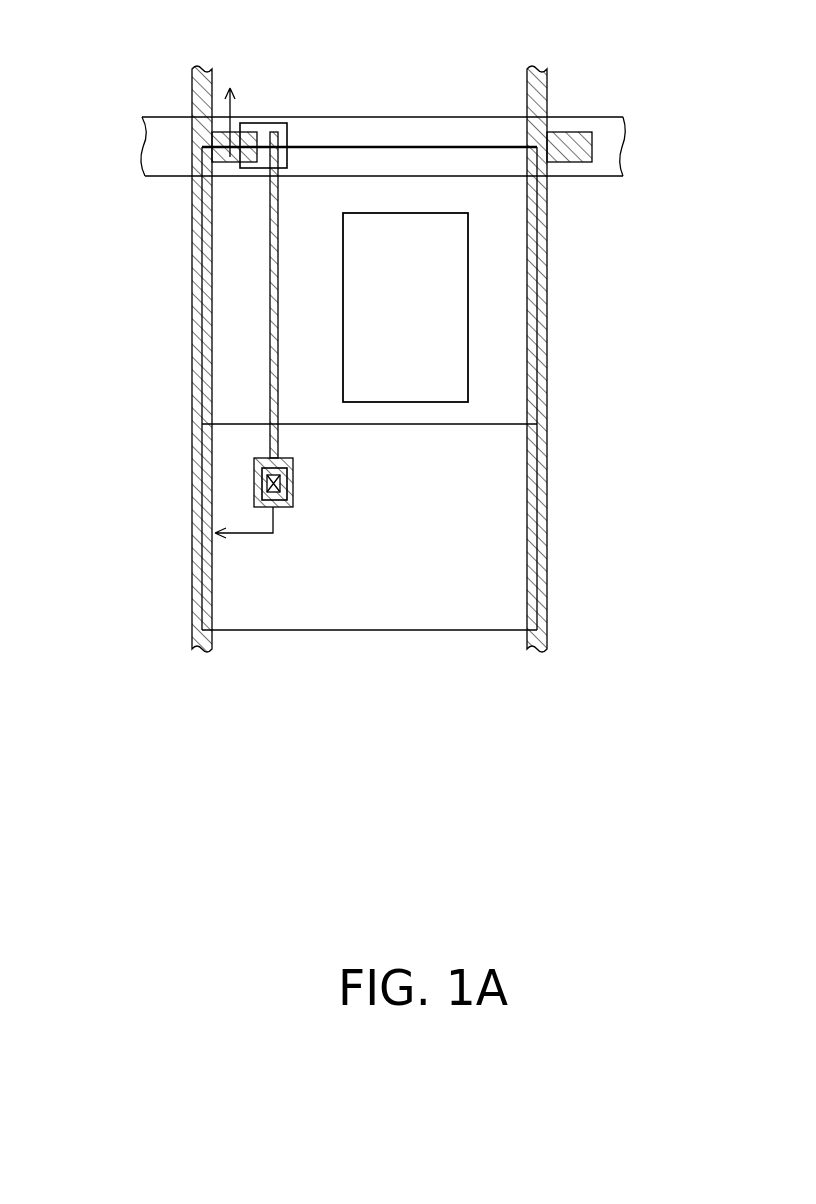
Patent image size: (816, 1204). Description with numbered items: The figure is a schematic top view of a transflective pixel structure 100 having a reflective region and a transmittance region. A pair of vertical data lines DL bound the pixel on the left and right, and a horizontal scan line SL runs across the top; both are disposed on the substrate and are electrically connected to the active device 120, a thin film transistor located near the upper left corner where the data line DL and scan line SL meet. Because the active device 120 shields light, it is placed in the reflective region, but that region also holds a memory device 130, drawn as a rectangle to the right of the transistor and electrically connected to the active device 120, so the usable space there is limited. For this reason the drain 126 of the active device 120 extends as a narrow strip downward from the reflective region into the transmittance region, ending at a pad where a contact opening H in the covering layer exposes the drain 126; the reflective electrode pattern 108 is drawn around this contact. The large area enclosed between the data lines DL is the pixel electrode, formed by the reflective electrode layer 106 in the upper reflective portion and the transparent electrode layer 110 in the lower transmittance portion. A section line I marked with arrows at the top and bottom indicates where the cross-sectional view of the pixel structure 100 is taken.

The transflective pixel structure 100 is at (714, 748).
The reflective electrode layer 106 is at (510, 344).
The reflective electrode pattern 108 is at (295, 481).
The transparent electrode layer 110 is at (510, 532).
The active device 120 is at (299, 101).
The drain 126 is at (295, 460).
The memory device 130 is at (468, 261).
The data line DL is at (203, 68).
The scan line SL is at (157, 143).
The contact opening H is at (290, 507).
The section line I-I' I is at (244, 314).